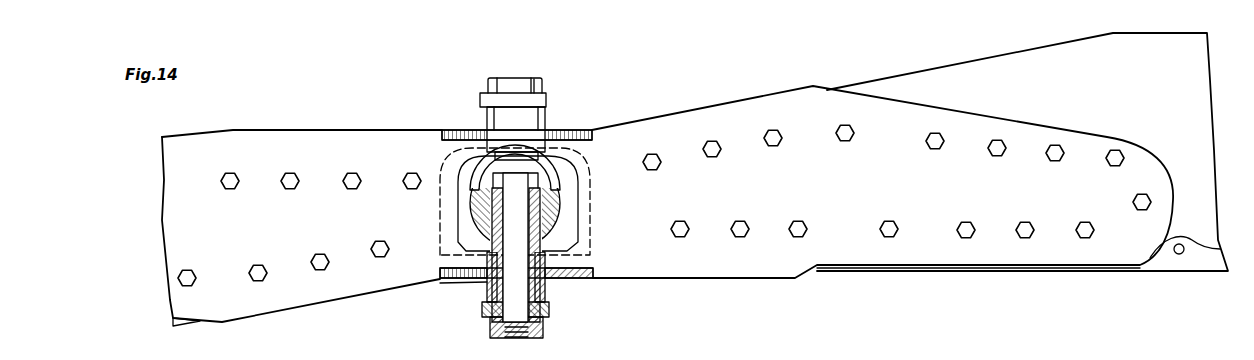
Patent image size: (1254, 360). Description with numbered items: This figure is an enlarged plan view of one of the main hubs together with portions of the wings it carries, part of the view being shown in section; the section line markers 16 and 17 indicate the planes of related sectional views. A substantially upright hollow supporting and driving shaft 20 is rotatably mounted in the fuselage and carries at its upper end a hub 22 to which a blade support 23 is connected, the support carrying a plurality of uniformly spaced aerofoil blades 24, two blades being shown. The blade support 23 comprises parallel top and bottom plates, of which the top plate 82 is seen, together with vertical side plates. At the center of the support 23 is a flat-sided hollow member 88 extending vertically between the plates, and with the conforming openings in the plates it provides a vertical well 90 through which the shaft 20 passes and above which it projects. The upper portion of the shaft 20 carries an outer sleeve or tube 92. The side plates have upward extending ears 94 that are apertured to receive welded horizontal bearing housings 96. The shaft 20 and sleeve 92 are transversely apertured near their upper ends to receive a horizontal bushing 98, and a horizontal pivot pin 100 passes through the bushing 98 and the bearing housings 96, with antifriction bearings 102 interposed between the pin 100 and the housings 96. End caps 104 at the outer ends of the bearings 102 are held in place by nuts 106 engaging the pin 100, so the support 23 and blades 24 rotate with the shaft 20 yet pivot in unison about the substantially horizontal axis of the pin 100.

The section line 16- 16 is at (380, 183).
The section line 17- 17 is at (515, 359).
The supporting and driving shaft 20 is at (543, 188).
The hub 22 is at (475, 183).
The blade support 23 is at (655, 122).
The aerofoil blade 24 is at (1005, 60).
The top plate 82 is at (997, 258).
The flat-sided hollow member 88 is at (583, 173).
The vertical well 90 is at (567, 197).
The outer sleeve or tube 92 is at (551, 214).
The upward extending ear 94 is at (563, 131).
The horizontal bearing housing 96 is at (487, 118).
The horizontal bushing 98 is at (463, 248).
The horizontal pivot pin 100 is at (505, 338).
The antifriction bearing 102 is at (470, 283).
The end cap 104 is at (480, 98).
The nut 106 is at (488, 80).